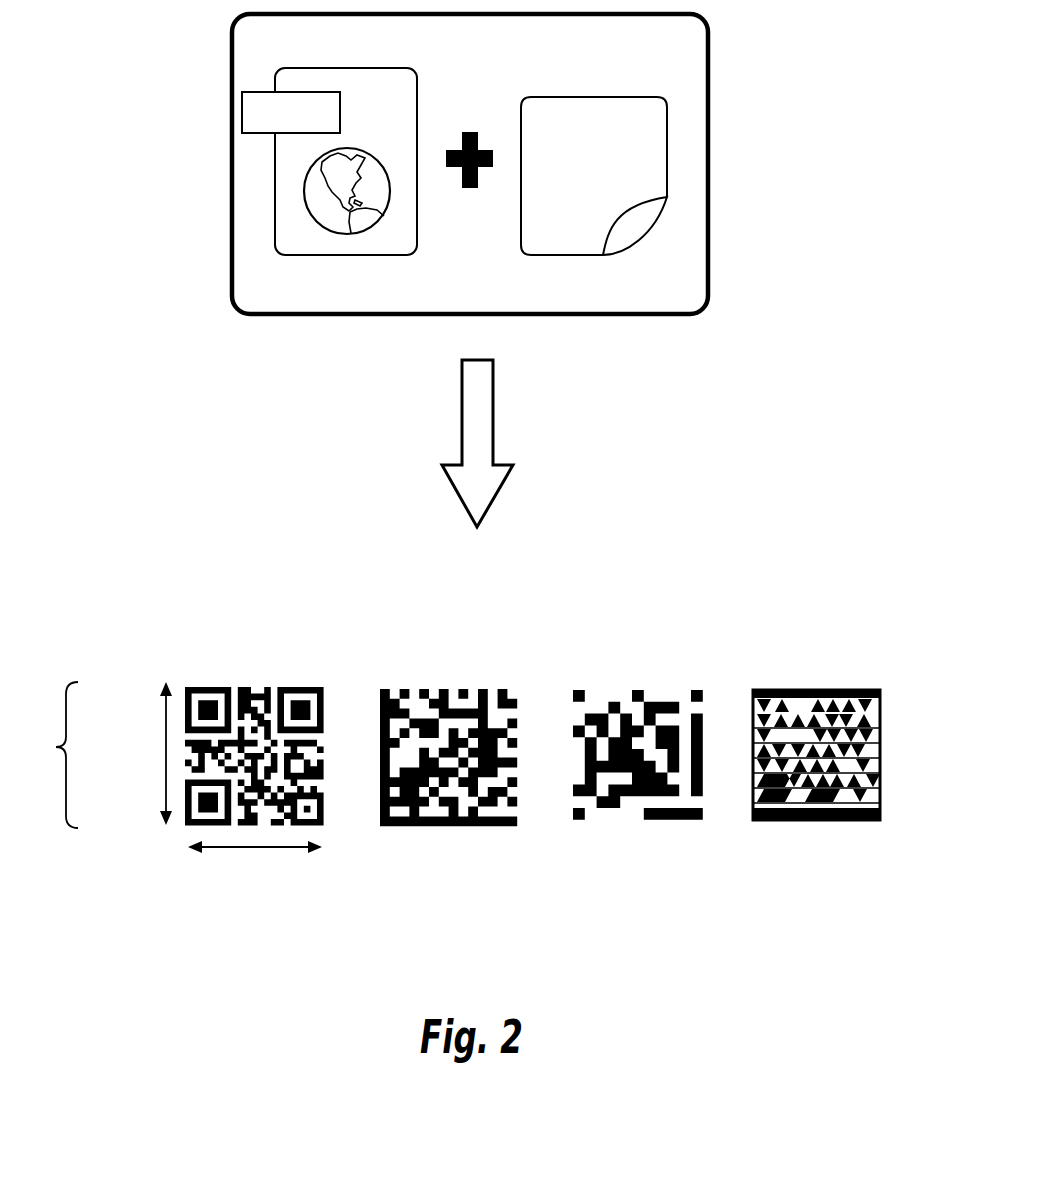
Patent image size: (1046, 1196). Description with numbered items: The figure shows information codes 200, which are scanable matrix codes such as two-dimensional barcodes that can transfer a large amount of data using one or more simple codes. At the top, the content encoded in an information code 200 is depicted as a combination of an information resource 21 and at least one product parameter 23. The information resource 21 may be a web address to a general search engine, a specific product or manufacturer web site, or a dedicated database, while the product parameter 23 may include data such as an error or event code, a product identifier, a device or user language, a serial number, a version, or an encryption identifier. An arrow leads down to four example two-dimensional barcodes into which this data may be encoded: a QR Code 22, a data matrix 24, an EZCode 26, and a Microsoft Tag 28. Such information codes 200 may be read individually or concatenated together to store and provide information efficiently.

The information resource 21 is at (252, 92).
The product parameter 23 is at (658, 166).
The information codes 200 is at (448, 755).
The QR Code 22 is at (238, 690).
The data matrix 24 is at (422, 690).
The EZCode 26 is at (600, 690).
The Microsoft Tag 28 is at (770, 690).